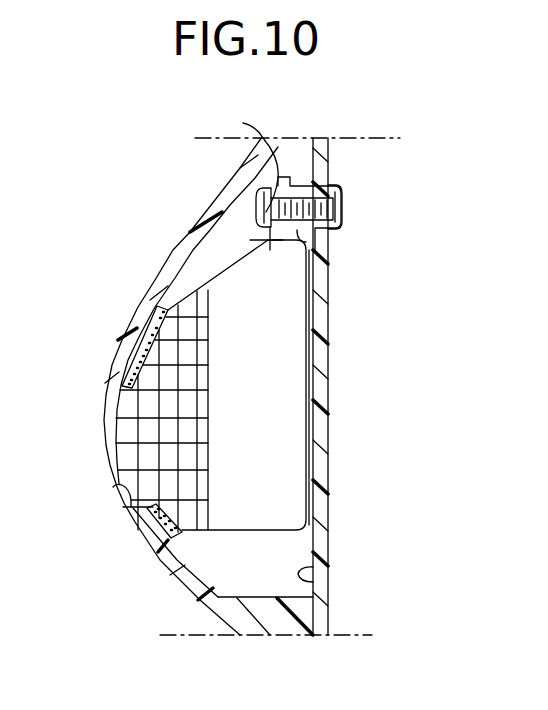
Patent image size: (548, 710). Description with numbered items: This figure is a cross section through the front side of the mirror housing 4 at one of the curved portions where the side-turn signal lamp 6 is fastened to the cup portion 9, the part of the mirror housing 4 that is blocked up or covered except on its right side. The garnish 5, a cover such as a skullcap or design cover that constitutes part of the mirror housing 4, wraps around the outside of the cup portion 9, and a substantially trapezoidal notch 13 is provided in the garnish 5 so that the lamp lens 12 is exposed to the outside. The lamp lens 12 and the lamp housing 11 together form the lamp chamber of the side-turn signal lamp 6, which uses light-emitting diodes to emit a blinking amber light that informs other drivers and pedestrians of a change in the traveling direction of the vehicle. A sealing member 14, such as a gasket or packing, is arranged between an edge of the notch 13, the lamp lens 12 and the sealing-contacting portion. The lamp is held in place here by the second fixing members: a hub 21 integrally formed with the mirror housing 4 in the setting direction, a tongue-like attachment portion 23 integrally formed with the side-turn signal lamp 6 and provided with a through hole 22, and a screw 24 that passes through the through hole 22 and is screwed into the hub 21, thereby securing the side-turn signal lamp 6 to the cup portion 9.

The mirror housing 4 is at (331, 543).
The garnish 5 is at (142, 541).
The side-turn signal lamp 6 is at (280, 403).
The cup portion 9 is at (321, 573).
The lamp housing 11 is at (285, 327).
The lamp lens 12 is at (120, 432).
The notch 13 is at (115, 488).
The sealing member 14 is at (175, 563).
The second fixing member (hub) 21 is at (303, 183).
The through hole 22 is at (258, 195).
The second fixing member (attachment portion) 23 is at (245, 161).
The second fixing member (screw) 24 is at (257, 212).